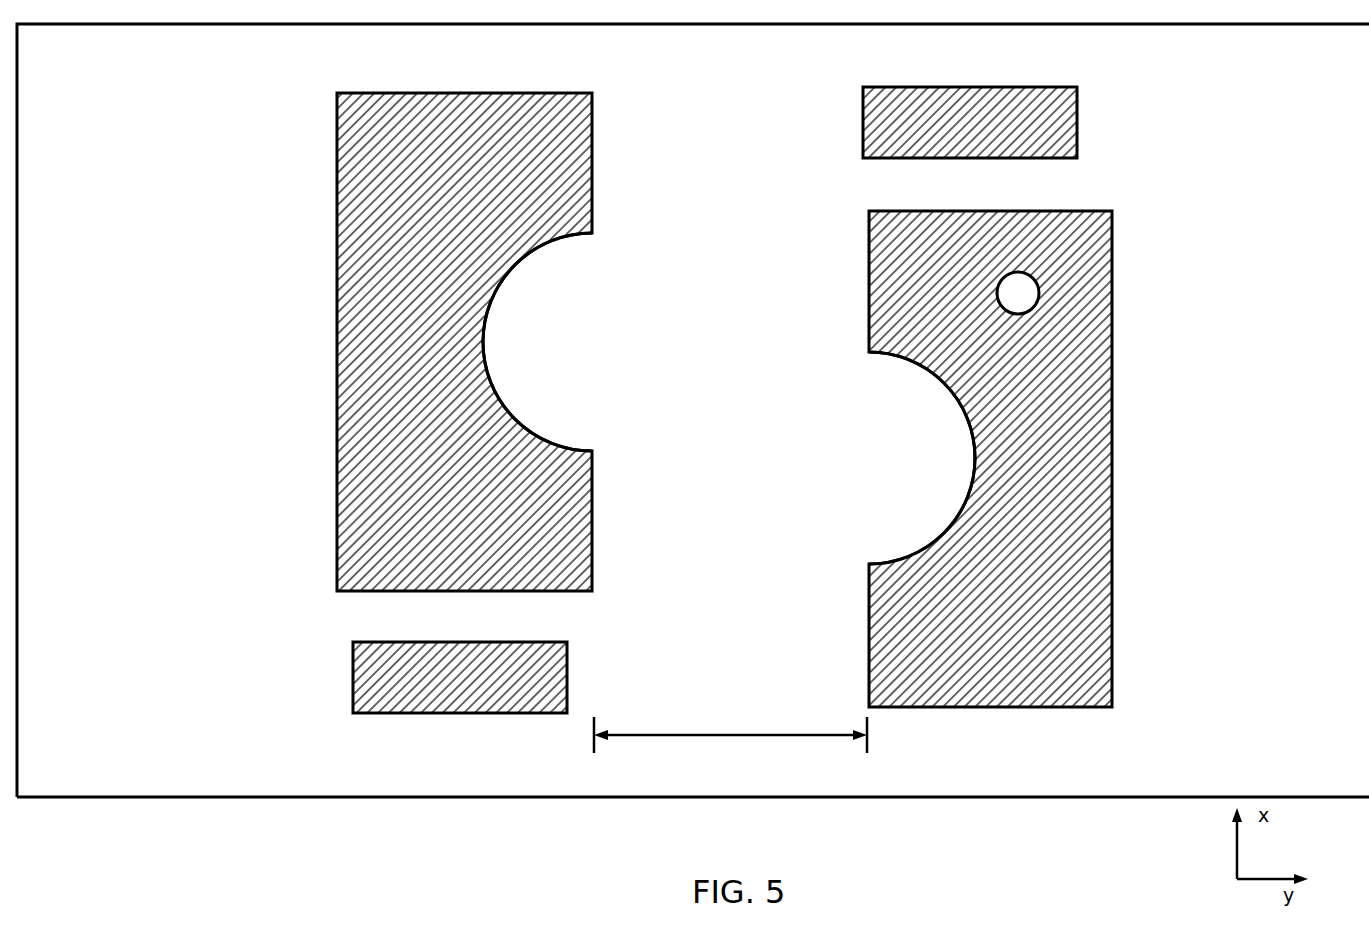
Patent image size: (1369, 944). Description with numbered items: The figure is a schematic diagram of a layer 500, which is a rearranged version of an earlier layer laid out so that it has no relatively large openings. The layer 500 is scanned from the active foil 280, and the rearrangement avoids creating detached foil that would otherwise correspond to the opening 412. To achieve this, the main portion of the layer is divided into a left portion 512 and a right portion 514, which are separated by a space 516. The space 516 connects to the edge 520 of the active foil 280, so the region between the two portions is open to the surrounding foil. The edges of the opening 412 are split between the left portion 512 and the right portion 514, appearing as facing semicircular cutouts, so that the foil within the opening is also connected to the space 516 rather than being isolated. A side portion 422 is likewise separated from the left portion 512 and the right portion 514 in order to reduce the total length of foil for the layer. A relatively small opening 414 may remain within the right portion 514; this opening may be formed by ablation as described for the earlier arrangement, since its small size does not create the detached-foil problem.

The active foil 280 is at (180, 802).
The layer 500 is at (247, 118).
The left portion 512 is at (337, 325).
The right portion 514 is at (1112, 537).
The opening 412 is at (572, 340).
The opening 414 is at (1018, 270).
The side portion 422 is at (943, 87).
The edge 520 is at (720, 50).
The space 516 is at (722, 737).